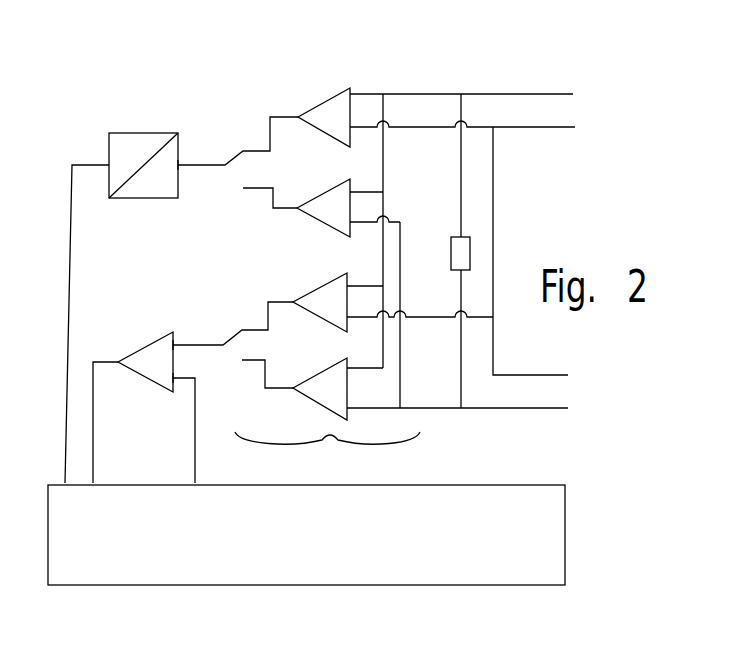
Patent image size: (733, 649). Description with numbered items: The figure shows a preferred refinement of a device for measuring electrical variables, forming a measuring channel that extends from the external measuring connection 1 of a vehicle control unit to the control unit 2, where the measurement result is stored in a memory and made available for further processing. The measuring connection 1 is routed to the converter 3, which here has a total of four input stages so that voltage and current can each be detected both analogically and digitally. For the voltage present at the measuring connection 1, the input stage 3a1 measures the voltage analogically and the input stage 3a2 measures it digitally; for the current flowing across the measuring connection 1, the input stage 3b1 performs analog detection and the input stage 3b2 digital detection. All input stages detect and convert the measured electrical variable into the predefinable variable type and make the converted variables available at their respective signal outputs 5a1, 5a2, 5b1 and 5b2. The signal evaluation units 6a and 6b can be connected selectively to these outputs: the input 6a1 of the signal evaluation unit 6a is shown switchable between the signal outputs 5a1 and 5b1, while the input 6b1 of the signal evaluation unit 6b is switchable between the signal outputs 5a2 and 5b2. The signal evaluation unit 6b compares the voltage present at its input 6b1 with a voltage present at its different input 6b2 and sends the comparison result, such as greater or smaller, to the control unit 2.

The measuring connection 1 is at (573, 95).
The control unit 2 is at (142, 546).
The converter 3 is at (327, 450).
The input stage 3a1 is at (348, 88).
The input stage 3b1 is at (348, 181).
The input stage 3a2 is at (346, 273).
The input stage 3b2 is at (346, 359).
The signal output 5a1 is at (238, 141).
The signal output 5b1 is at (259, 202).
The signal output 5a2 is at (233, 323).
The signal output 5b2 is at (253, 379).
The signal evaluation unit 6a is at (110, 137).
The input 6a1 is at (179, 163).
The signal evaluation unit 6b is at (135, 351).
The input 6b1 is at (183, 332).
The input 6b2 is at (174, 388).